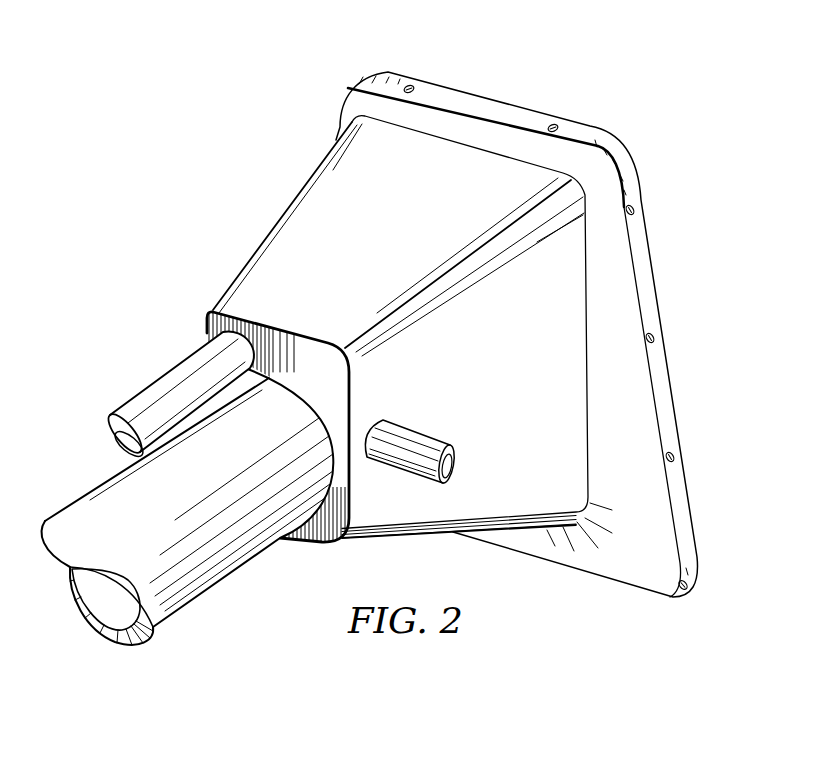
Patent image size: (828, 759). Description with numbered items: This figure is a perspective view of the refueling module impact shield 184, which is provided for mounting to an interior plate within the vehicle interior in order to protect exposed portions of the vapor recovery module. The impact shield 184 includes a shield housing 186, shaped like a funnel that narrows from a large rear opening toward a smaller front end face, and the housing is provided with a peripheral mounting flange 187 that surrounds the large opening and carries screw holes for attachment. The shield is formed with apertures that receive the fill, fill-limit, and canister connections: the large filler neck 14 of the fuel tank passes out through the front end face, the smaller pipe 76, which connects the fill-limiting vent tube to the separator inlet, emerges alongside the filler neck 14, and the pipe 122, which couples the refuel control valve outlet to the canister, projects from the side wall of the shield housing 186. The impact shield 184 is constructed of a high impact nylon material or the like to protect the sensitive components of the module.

The filler neck 14 is at (187, 566).
The pipe 76 is at (142, 417).
The pipe 122 is at (424, 442).
The refueling module impact shield 184 is at (557, 96).
The shield housing 186 is at (317, 217).
The peripheral mounting flange 187 is at (650, 296).